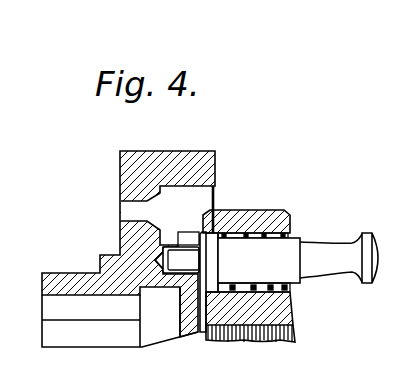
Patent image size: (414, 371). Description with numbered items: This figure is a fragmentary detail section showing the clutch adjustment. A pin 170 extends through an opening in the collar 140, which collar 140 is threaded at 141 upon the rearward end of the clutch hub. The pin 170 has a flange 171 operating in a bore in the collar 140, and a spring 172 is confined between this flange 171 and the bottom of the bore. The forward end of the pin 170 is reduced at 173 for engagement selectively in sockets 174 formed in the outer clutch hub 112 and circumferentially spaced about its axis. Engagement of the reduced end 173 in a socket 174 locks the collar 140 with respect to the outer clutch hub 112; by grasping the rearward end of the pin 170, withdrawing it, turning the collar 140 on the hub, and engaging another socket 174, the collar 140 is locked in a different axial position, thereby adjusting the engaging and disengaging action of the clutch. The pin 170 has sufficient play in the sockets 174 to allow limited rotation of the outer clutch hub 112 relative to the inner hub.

The outer clutch hub member 112 is at (58, 273).
The collar 140 is at (282, 307).
The threads 141 is at (290, 332).
The pin 170 is at (320, 257).
The flange 171 is at (210, 242).
The spring 172 is at (268, 210).
The reduced forward end 173 is at (183, 258).
The sockets 174 is at (158, 260).